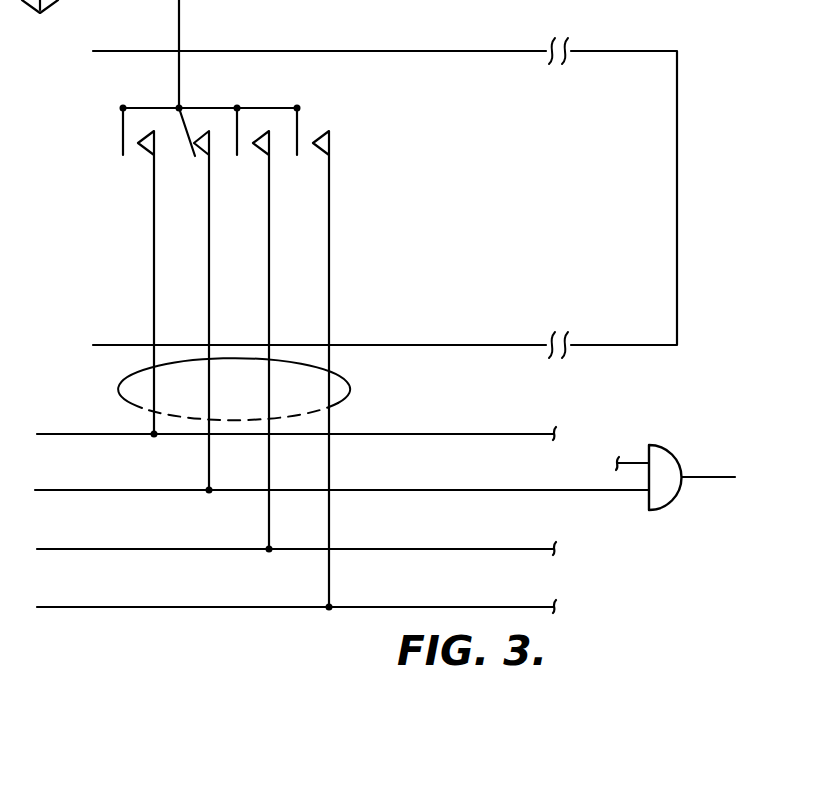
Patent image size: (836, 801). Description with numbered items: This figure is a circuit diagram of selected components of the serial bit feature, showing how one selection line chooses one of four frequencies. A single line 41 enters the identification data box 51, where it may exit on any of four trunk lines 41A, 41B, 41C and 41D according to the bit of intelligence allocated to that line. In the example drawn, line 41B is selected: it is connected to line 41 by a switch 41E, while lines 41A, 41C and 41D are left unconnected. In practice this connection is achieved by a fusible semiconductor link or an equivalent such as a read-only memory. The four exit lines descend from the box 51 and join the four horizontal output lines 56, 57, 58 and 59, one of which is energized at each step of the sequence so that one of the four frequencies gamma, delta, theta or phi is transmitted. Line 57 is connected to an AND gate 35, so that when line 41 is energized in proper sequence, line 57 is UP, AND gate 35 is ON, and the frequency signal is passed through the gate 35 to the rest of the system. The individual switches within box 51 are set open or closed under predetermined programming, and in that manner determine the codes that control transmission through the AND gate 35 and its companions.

The AND gate 35 is at (667, 462).
The line 41 is at (181, 14).
The line 41A is at (154, 246).
The line 41B is at (208, 268).
The line 41C is at (268, 246).
The line 41D is at (328, 270).
The switch 41E is at (194, 143).
The identification data box 51 is at (93, 181).
The line 56 is at (88, 432).
The line 57 is at (80, 489).
The line 58 is at (84, 548).
The line 59 is at (82, 606).